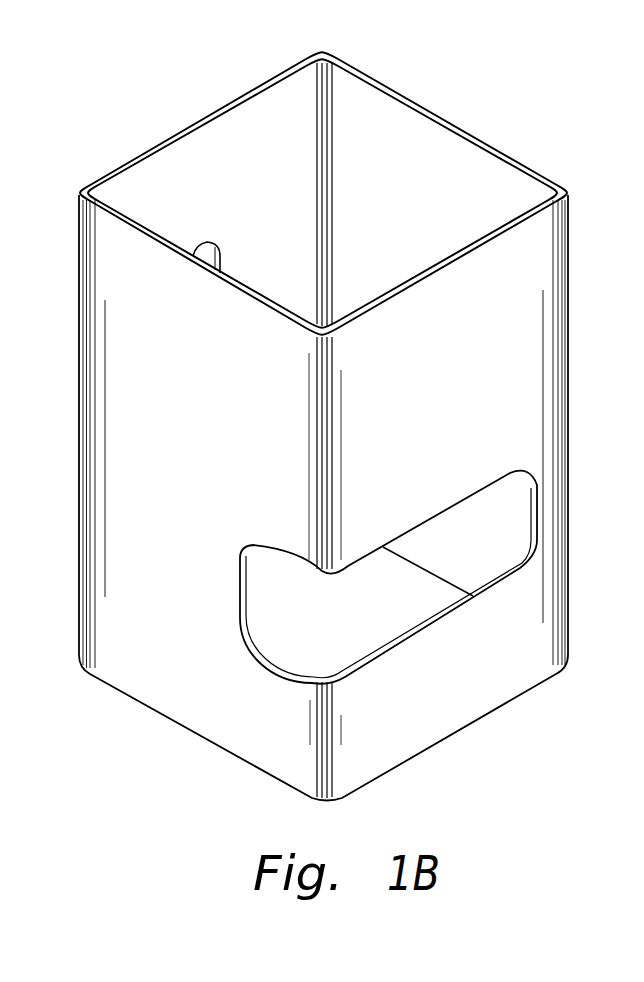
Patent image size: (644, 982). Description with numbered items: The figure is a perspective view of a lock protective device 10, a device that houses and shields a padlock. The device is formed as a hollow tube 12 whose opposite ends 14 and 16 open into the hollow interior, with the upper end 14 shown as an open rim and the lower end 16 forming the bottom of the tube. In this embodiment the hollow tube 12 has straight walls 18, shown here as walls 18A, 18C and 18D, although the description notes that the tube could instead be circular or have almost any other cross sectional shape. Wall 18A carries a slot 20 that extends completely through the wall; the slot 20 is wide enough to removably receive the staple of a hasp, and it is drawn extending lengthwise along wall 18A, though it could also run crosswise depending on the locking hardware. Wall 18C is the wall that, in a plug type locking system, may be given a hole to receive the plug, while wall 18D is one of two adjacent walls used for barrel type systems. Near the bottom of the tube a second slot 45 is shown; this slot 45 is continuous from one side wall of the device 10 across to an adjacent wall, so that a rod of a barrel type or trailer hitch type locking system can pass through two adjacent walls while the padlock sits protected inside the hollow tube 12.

The lock protective device 10 is at (176, 768).
The hollow tube 12 is at (325, 402).
The end 14 is at (493, 143).
The end 16 is at (467, 725).
The walls 18 is at (145, 388).
The wall 18A is at (155, 185).
The wall 18C is at (440, 172).
The wall 18D is at (480, 662).
The slot 20 is at (212, 243).
The slot 45 is at (410, 635).